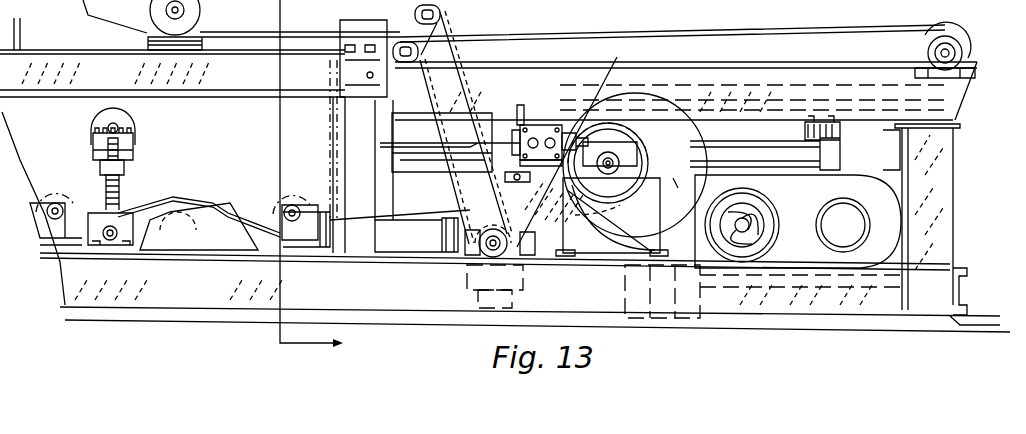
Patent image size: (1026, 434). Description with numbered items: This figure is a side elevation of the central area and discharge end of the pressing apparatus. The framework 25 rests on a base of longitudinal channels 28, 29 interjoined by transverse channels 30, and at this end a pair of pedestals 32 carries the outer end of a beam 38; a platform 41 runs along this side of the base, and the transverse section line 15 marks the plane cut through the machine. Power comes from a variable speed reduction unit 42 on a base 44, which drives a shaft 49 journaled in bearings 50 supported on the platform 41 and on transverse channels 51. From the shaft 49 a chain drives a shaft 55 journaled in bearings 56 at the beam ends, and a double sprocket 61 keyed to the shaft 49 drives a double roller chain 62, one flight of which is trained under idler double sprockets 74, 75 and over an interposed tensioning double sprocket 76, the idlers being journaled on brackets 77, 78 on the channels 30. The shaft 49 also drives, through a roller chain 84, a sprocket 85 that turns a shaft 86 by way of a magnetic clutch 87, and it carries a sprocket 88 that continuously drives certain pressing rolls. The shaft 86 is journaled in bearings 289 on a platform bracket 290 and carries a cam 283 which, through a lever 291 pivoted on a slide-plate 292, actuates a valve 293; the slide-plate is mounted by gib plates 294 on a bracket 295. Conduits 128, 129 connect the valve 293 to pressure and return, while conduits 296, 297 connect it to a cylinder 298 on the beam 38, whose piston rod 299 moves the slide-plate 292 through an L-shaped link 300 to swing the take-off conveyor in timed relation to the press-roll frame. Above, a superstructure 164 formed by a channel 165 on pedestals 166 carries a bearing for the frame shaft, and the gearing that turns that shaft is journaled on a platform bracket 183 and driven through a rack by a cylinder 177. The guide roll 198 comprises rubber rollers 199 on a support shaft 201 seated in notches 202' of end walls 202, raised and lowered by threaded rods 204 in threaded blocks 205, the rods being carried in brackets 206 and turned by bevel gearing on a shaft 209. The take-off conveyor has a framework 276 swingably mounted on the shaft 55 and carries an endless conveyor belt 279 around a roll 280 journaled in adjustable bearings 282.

The machine section arrow 15 is at (309, 369).
The framework 25 is at (750, 298).
The longitudinally arranged channel 28 is at (857, 307).
The longitudinally arranged channel 29 is at (223, 287).
The transversely disposed channel 30 is at (955, 289).
The pedestal 32 is at (927, 192).
The beam 38 is at (942, 110).
The platform 41 is at (172, 258).
The variable speed reduction unit 42 is at (878, 228).
The base 44 is at (805, 310).
The shaft 49 is at (478, 258).
The bearing 50 is at (522, 250).
The transversely disposed channel 51 is at (472, 313).
The shaft 55 is at (943, 48).
The bearing 56 is at (962, 45).
The double sprocket 61 is at (487, 218).
The double roller chain 62 is at (263, 200).
The idler double sprocket 74 is at (290, 200).
The idler double sprocket 75 is at (66, 193).
The tensioning double sprocket 76 is at (182, 206).
The bracket 77 is at (307, 213).
The bracket 78 is at (40, 203).
The roller chain 84 is at (598, 168).
The sprocket 85 is at (618, 136).
The shaft 86 is at (700, 222).
The magnetic clutch 87 is at (650, 125).
The sprocket 88 is at (487, 255).
The conduit 128 is at (525, 127).
The conduit 129 is at (513, 179).
The superstructure 164 is at (55, 72).
The horizontally disposed channel 165 is at (96, 75).
The pedestal 166 is at (340, 150).
The cylinder 177 is at (405, 237).
The platform bracket 183 is at (215, 217).
The guide roll 198 is at (86, 120).
The rubber roller 199 is at (113, 118).
The support shaft 201 is at (128, 130).
The end wall 202 is at (144, 160).
The notch 202' is at (144, 146).
The threaded rod 204 is at (108, 147).
The threaded block 205 is at (104, 165).
The bracket 206 is at (120, 212).
The shaft 209 is at (118, 235).
The framework 276 is at (735, 65).
The endless conveyor belt 279 is at (605, 26).
The roll 280 is at (326, 30).
The bearing 282 is at (313, 43).
The cam 283 is at (693, 133).
The bearing 289 is at (617, 170).
The platform bracket 290 is at (642, 300).
The lever 291 is at (578, 143).
The slide-plate 292 is at (550, 132).
The valve 293 is at (515, 125).
The gib plate 294 is at (405, 117).
The bracket 295 is at (427, 158).
The conduit 296 is at (543, 130).
The conduit 297 is at (510, 110).
The cylinder 298 is at (798, 153).
The piston rod 299 is at (691, 184).
The L-shaped link 300 is at (630, 172).